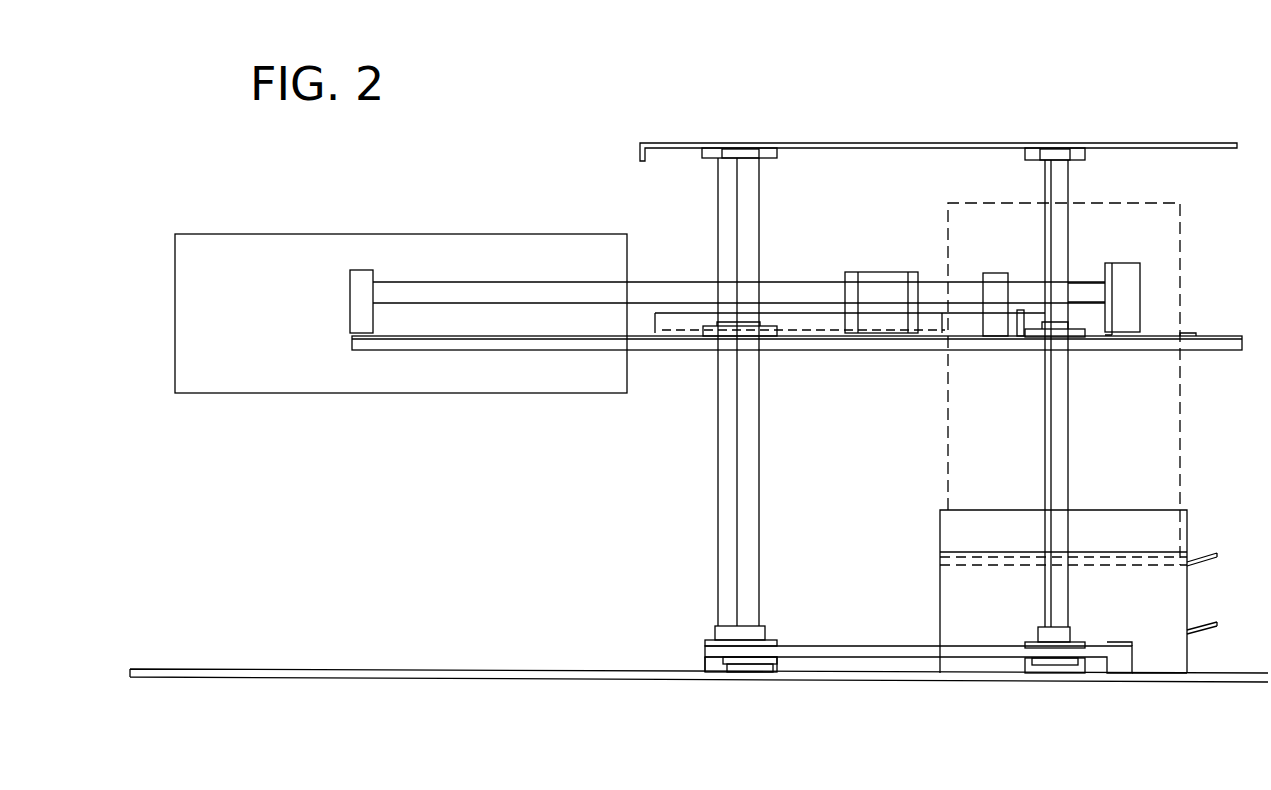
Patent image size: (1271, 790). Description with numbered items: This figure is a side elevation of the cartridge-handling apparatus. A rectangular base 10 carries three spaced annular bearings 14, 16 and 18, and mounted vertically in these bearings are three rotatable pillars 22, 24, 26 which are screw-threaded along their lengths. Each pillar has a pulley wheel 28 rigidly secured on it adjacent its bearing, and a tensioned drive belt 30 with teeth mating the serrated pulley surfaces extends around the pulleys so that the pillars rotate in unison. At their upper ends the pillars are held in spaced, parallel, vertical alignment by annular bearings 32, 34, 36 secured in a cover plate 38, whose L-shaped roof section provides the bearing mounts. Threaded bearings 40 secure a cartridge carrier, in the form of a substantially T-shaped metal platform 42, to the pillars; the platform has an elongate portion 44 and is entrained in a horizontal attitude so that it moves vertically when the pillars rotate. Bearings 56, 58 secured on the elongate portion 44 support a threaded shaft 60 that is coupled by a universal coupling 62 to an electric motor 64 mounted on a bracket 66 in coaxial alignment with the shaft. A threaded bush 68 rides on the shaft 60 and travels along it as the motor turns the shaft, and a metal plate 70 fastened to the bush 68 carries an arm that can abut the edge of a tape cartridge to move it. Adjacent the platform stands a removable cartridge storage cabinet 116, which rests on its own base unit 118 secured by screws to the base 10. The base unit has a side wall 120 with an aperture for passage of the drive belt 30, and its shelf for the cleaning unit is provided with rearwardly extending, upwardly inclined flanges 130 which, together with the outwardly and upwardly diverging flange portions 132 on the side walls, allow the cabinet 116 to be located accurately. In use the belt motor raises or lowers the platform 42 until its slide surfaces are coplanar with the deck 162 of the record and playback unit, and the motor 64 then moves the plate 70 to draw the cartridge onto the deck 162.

The rectangular base 10 is at (545, 670).
The annular bearing 14 is at (713, 673).
The annular bearing 16 is at (767, 673).
The annular bearing 18 is at (1078, 674).
The rotatable pillar 22 is at (722, 565).
The rotatable pillar 24 is at (758, 598).
The rotatable pillar 26 is at (1060, 605).
The pulley wheel 28 is at (708, 632).
The drive belt 30 is at (862, 650).
The annular bearing 32 is at (710, 150).
The annular bearing 34 is at (750, 152).
The annular bearing 36 is at (1060, 150).
The cover plate 38 is at (910, 143).
The threaded bearing 40 is at (713, 331).
The platform 42 is at (880, 350).
The elongate portion 44 is at (560, 350).
The bearing 56 is at (362, 300).
The bearing 58 is at (1000, 325).
The threaded shaft 60 is at (672, 290).
The universal coupling 62 is at (1072, 293).
The electric motor 64 is at (1130, 270).
The bracket 66 is at (1188, 334).
The threaded bush 68 is at (912, 323).
The metal plate 70 is at (1022, 315).
The cartridge storage cabinet 116 is at (1188, 445).
The base unit 118 is at (1190, 600).
The side wall 120 is at (1150, 674).
The flange 130 is at (1210, 628).
The flange portion 132 is at (1165, 540).
The deck 162 is at (445, 234).